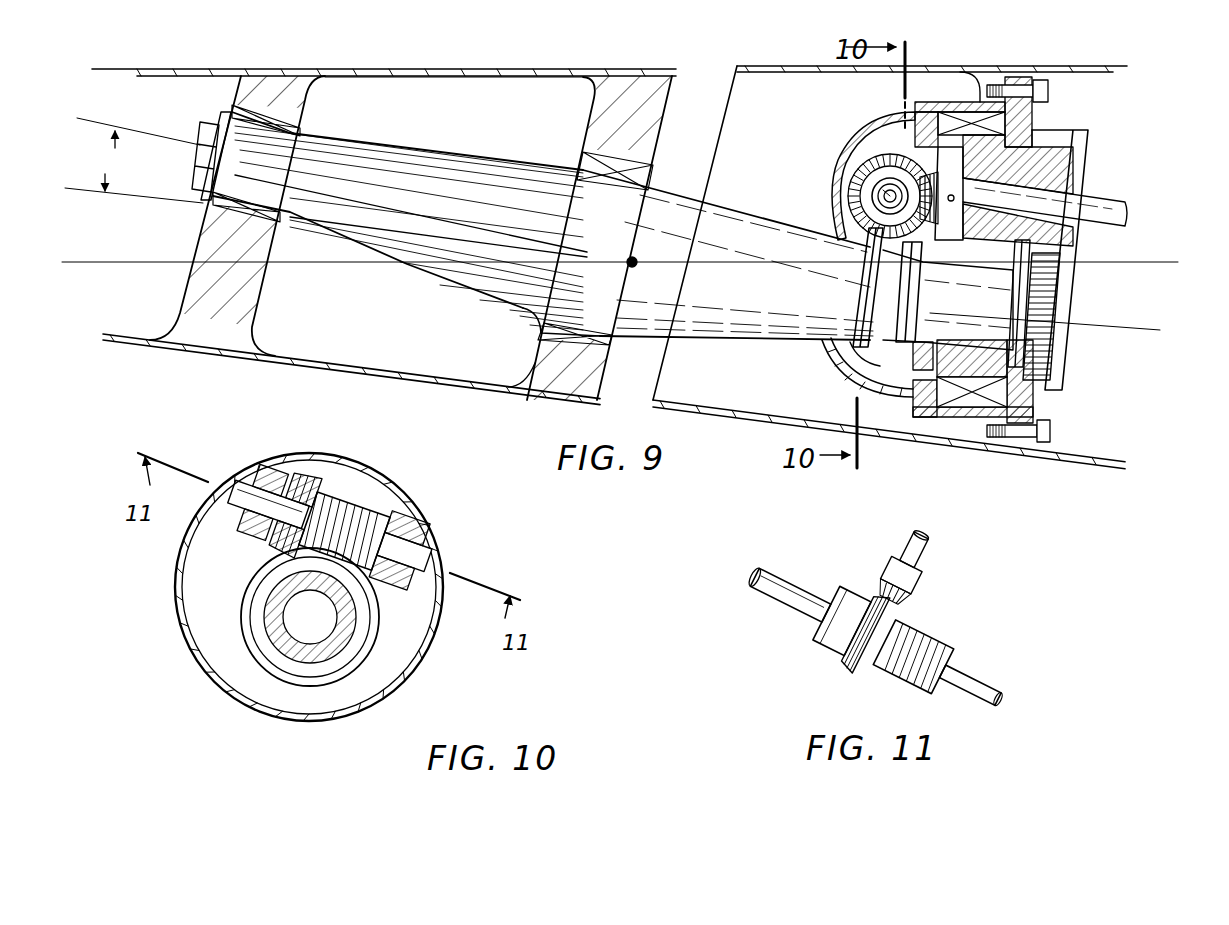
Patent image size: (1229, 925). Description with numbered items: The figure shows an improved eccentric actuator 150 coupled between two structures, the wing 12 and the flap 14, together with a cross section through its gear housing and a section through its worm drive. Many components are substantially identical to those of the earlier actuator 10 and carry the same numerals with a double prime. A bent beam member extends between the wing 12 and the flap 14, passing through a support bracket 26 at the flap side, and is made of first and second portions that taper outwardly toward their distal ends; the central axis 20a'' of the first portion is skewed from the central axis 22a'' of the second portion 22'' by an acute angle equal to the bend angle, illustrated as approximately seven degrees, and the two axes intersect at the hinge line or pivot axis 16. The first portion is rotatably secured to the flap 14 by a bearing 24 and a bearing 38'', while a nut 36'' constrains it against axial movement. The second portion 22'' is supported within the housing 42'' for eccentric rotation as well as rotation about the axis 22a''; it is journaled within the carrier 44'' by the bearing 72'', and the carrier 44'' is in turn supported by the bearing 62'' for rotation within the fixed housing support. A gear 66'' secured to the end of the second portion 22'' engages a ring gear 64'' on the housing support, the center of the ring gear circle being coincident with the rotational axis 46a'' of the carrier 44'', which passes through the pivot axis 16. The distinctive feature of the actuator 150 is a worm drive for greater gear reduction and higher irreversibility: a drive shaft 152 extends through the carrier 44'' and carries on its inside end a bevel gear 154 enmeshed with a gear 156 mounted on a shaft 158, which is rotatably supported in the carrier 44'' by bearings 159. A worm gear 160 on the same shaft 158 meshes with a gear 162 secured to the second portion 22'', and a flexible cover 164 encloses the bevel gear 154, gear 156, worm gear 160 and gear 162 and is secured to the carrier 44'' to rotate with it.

In FIG. 9, the actuator 10 is at (606, 68).
In FIG. 9, the wing 12 is at (790, 50).
In FIG. 9, the flap 14 is at (337, 73).
In FIG. 9, the hinge line or pivot axis 16 is at (637, 259).
In FIG. 9, the central axis 20a'' is at (154, 156).
In FIG. 9, the second portion 22'' is at (798, 257).
In FIG. 10, the second portion 22'' is at (278, 617).
In FIG. 9, the central axis 22a'' is at (1045, 340).
In FIG. 9, the bearing 24 is at (240, 106).
In FIG. 9, the support bracket 26 is at (206, 286).
In FIG. 9, the nut 36'' is at (178, 157).
In FIG. 9, the bearing 38'' is at (535, 322).
In FIG. 9, the housing 42'' is at (816, 233).
In FIG. 9, the carrier 44'' is at (1026, 233).
In FIG. 9, the rotational axis 46a'' is at (1033, 243).
In FIG. 9, the bearing 62'' is at (976, 405).
In FIG. 9, the ring gear 64'' is at (1061, 118).
In FIG. 9, the gear 66'' is at (1079, 316).
In FIG. 9, the bearing 72'' is at (941, 301).
In FIG. 9, the actuator 150 is at (504, 70).
In FIG. 9, the drive shaft 152 is at (1104, 216).
In FIG. 11, the drive shaft 152 is at (927, 563).
In FIG. 9, the bevel gear 154 is at (946, 184).
In FIG. 11, the bevel gear 154 is at (878, 583).
In FIG. 9, the gear 156 is at (850, 178).
In FIG. 10, the gear 156 is at (307, 478).
In FIG. 11, the gear 156 is at (820, 668).
In FIG. 9, the shaft 158 is at (878, 200).
In FIG. 10, the shaft 158 is at (307, 510).
In FIG. 11, the shaft 158 is at (805, 550).
In FIG. 10, the bearings 159 is at (283, 466).
In FIG. 9, the worm gear 160 is at (872, 212).
In FIG. 10, the worm gear 160 is at (353, 527).
In FIG. 11, the worm gear 160 is at (933, 637).
In FIG. 9, the gear 162 is at (866, 348).
In FIG. 10, the gear 162 is at (380, 627).
In FIG. 9, the flexible cover 164 is at (863, 388).
In FIG. 10, the flexible cover 164 is at (400, 693).